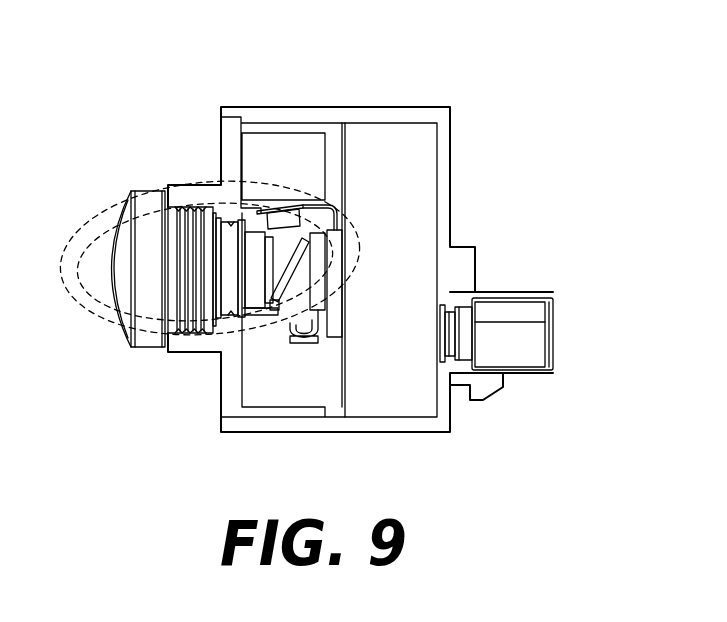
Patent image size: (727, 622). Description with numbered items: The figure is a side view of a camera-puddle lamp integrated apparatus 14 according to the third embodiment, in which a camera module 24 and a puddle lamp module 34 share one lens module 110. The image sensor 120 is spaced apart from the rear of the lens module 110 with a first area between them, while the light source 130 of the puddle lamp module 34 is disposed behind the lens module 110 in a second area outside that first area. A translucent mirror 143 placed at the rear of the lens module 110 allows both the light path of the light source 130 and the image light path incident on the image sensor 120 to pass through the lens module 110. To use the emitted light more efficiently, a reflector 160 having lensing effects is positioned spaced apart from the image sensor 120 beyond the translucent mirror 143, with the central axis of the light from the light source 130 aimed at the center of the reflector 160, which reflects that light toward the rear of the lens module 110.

The camera-puddle lamp integrated apparatus 14 is at (89, 49).
The camera module 24 is at (95, 302).
The puddle lamp module 34 is at (100, 228).
The lens module 110 is at (150, 195).
The image sensor 120 is at (340, 247).
The light source 130 is at (300, 202).
The translucent mirror 143 is at (273, 302).
The reflector 160 is at (307, 342).